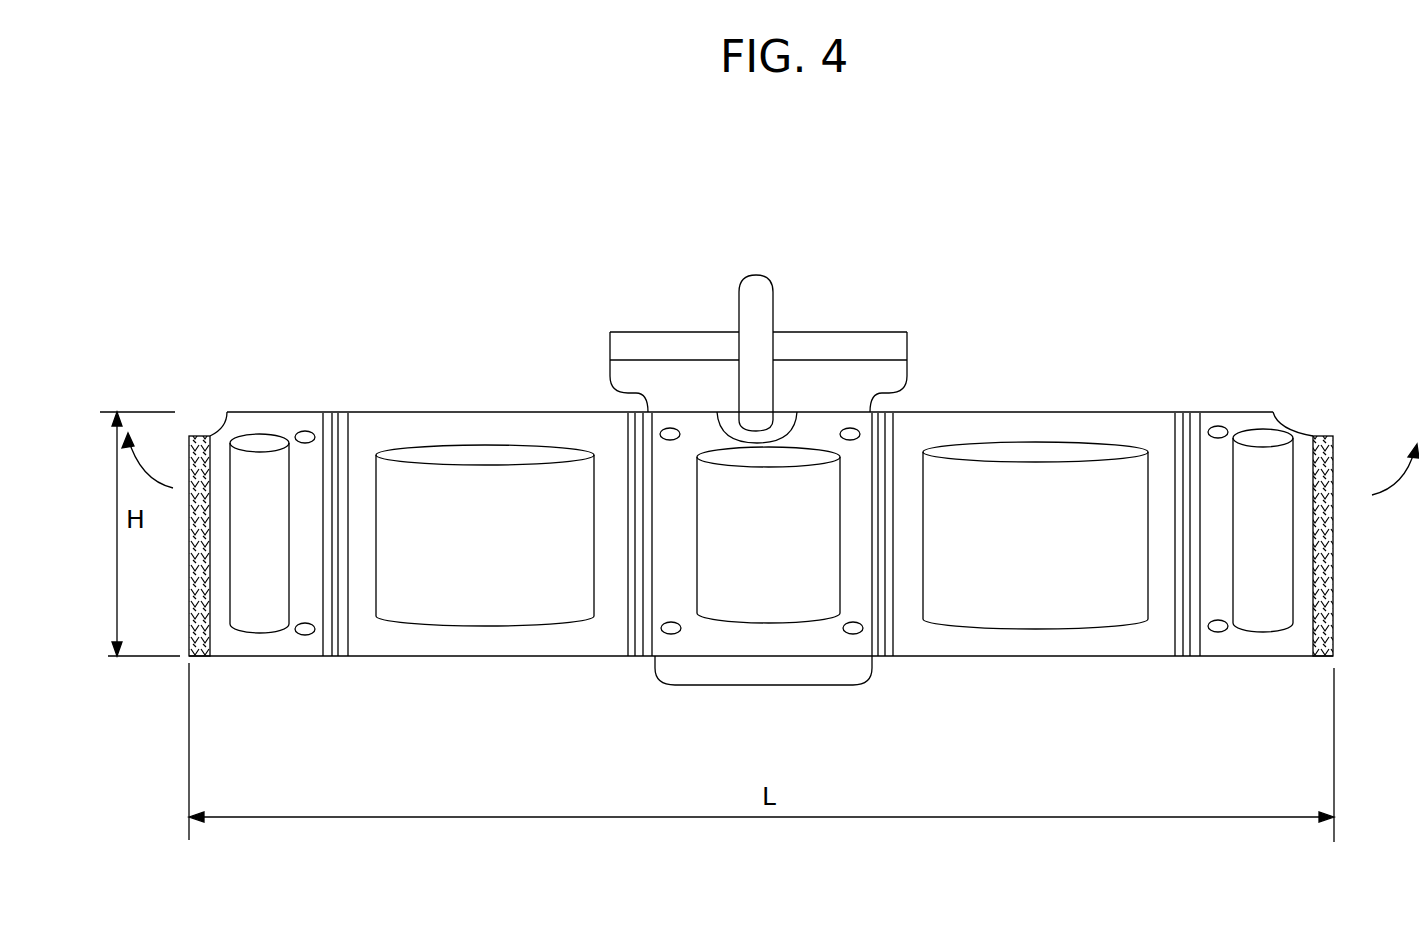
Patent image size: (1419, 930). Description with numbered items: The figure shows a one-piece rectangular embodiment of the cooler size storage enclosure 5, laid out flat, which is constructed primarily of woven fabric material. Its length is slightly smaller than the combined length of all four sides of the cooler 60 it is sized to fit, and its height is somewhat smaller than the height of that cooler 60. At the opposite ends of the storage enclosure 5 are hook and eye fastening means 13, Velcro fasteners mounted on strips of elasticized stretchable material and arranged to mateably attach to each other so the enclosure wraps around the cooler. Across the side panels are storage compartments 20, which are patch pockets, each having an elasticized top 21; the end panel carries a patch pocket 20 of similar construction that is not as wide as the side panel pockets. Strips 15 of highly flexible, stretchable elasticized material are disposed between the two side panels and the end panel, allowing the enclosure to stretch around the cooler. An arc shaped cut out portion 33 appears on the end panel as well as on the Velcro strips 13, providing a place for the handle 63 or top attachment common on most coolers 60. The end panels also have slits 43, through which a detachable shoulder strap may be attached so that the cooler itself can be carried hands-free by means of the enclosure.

The cooler size storage enclosure 5 is at (953, 667).
The hook and eye fastening means 13 is at (198, 532).
The strips of elasticized material 15 is at (338, 657).
The storage compartments 20 is at (258, 630).
The elasticized top 21 is at (448, 455).
The arc shaped cut out portion 33 is at (223, 423).
The slits 43 is at (305, 442).
The cooler 60 is at (858, 312).
The handle 63 is at (760, 275).